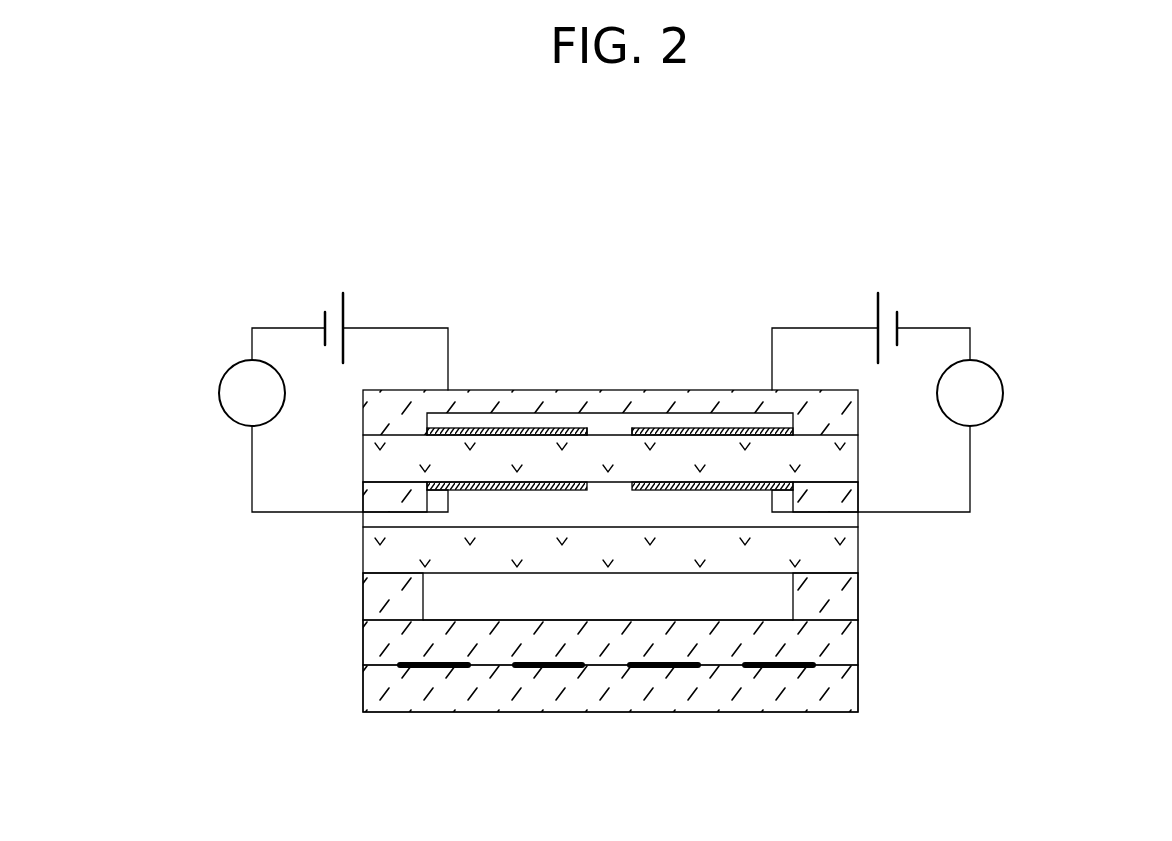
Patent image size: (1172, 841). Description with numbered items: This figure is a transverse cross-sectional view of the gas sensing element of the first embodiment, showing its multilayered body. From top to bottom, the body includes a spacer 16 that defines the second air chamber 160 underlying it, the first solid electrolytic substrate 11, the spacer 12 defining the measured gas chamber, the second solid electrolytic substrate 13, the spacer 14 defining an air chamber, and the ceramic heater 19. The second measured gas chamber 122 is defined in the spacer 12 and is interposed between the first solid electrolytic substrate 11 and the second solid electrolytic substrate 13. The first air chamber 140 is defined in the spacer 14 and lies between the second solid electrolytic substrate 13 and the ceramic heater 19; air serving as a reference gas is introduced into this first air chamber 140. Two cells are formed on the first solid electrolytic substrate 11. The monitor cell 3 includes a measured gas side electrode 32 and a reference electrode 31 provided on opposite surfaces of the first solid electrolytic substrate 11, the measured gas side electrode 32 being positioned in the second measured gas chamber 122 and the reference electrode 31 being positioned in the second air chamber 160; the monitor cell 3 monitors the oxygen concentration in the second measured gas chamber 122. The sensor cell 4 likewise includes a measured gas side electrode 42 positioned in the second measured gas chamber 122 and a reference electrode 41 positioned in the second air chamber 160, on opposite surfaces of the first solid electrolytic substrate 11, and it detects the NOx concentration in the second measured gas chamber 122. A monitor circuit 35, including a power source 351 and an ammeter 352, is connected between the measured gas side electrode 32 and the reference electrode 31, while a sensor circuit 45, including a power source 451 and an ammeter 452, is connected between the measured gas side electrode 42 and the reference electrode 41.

The monitor cell 3 is at (494, 407).
The sensor cell 4 is at (681, 407).
The first solid electrolytic substrate 11 is at (380, 462).
The spacer defining the measured gas chamber 12 is at (378, 523).
The second solid electrolytic substrate 13 is at (383, 570).
The spacer defining an air chamber 14 is at (393, 603).
The spacer 16 is at (827, 422).
The ceramic heater 19 is at (868, 620).
The reference electrode 31 is at (532, 430).
The measured gas side electrode 32 is at (498, 492).
The monitor circuit 35 is at (267, 513).
The reference electrode 41 is at (727, 430).
The measured gas side electrode 42 is at (682, 491).
The sensor circuit 45 is at (972, 485).
The second measured gas chamber 122 is at (602, 510).
The first air chamber 140 is at (722, 603).
The second air chamber 160 is at (610, 432).
The power source 351 is at (340, 312).
The ammeter 352 is at (217, 393).
The power source 451 is at (875, 311).
The ammeter 452 is at (1005, 392).